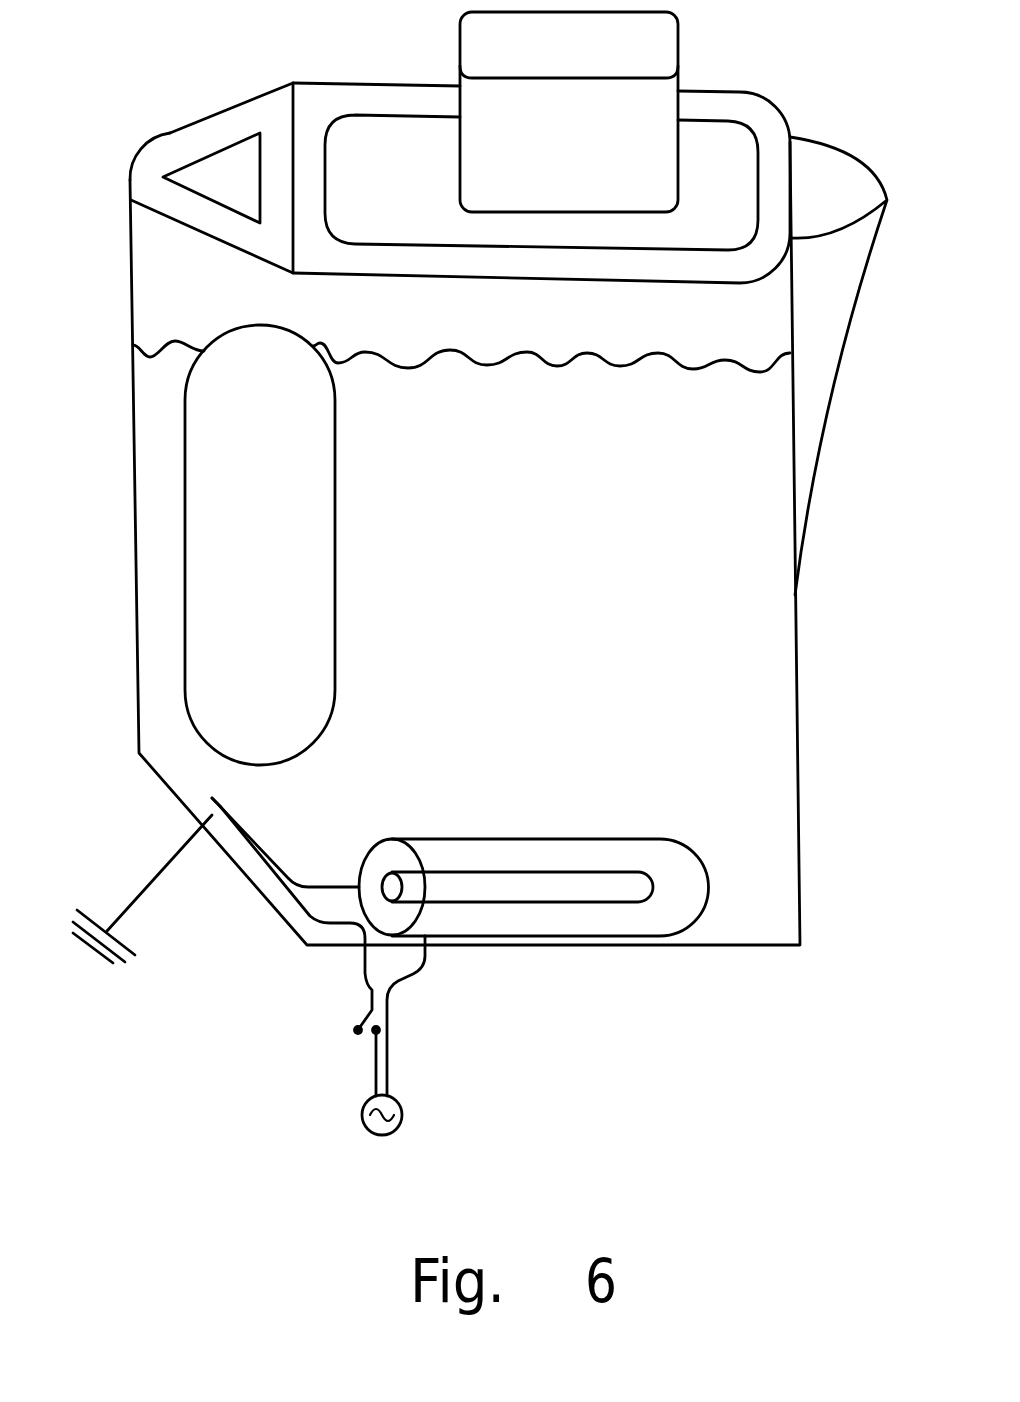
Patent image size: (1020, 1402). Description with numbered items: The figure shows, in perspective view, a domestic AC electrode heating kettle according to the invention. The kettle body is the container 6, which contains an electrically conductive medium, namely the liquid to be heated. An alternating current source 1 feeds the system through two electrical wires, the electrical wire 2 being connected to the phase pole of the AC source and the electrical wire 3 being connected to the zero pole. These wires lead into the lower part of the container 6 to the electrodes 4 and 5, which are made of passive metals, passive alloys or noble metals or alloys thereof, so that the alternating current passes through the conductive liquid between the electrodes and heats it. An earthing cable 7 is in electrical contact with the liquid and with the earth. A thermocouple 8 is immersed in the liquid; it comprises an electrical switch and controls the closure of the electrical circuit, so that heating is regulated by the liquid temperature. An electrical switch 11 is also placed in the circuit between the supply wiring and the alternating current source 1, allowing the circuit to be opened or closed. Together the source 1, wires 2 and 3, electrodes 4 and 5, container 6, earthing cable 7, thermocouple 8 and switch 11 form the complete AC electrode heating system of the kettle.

The alternating current source 1 is at (402, 1127).
The electrical wire 2 is at (374, 1076).
The electrical wire 3 is at (390, 1067).
The electrode 4 is at (570, 837).
The electrode 5 is at (510, 903).
The container 6 is at (797, 700).
The earthing cable 7 is at (158, 873).
The thermocouple 8 is at (253, 837).
The electrical switch 11 is at (359, 1021).